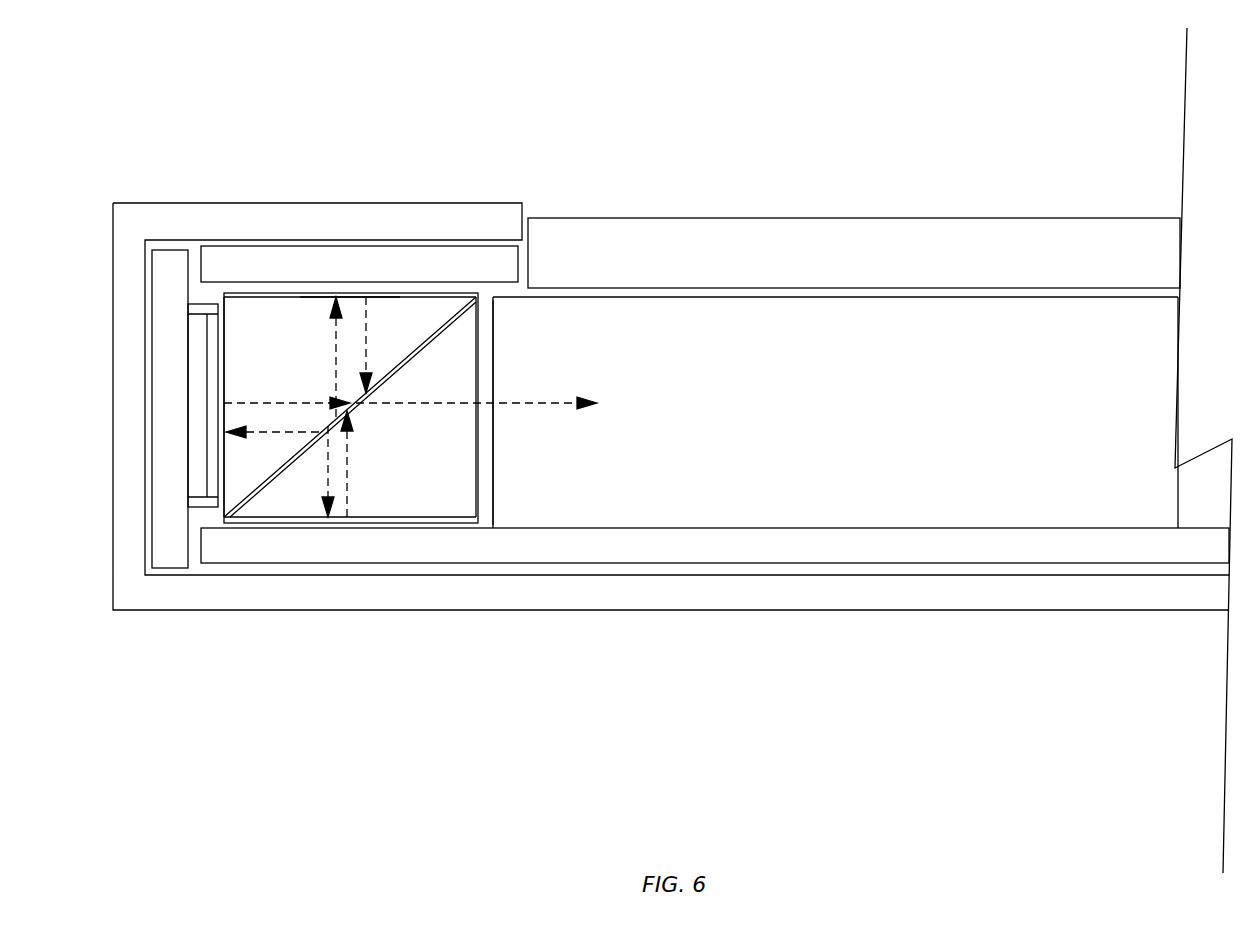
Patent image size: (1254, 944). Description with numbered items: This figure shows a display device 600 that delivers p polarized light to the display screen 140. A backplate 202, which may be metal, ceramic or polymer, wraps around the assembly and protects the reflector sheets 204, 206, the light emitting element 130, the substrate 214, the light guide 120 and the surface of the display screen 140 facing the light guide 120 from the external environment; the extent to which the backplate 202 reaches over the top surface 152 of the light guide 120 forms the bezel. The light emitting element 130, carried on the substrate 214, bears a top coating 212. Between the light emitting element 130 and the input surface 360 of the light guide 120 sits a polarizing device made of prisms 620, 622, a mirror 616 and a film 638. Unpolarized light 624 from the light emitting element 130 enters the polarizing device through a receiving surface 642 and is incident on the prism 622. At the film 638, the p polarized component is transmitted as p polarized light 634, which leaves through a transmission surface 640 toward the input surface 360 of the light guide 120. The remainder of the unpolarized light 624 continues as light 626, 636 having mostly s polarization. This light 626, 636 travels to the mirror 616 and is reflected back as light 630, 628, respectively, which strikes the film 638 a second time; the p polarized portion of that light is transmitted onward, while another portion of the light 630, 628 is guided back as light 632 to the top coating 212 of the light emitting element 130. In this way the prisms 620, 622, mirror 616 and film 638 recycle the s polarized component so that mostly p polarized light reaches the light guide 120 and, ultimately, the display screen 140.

The display device 600 is at (190, 151).
The backplate 202 is at (690, 610).
The substrate 214 is at (172, 311).
The light emitting element 130 is at (192, 368).
The top coating 212 is at (213, 466).
The reflector sheet 206 is at (520, 270).
The reflector sheet 204 is at (1113, 528).
The display screen 140 is at (1127, 233).
The light guide 120 is at (873, 300).
The top surface of the light guide 152 is at (722, 297).
The input surface of the light guide 360 is at (493, 460).
The prism 620 is at (475, 490).
The mirror 616 is at (247, 295).
The transmission surface 640 is at (475, 388).
The receiving surface 642 is at (227, 368).
The prism 622 is at (350, 308).
The film 638 is at (455, 308).
The light 626 is at (335, 362).
The light 630 is at (368, 358).
The light 636 is at (323, 490).
The light 628 is at (348, 480).
The unpolarized light 624 is at (247, 407).
The light 632 is at (257, 427).
The p polarized light 634 is at (562, 403).